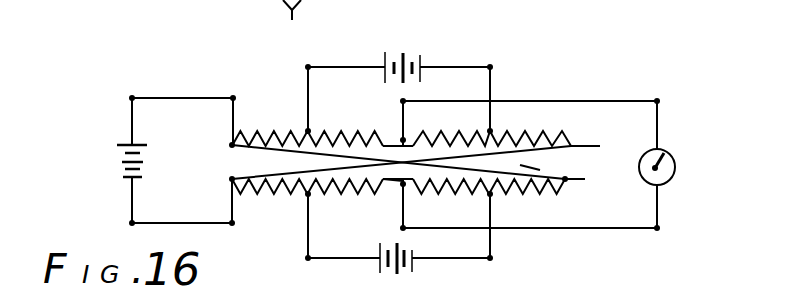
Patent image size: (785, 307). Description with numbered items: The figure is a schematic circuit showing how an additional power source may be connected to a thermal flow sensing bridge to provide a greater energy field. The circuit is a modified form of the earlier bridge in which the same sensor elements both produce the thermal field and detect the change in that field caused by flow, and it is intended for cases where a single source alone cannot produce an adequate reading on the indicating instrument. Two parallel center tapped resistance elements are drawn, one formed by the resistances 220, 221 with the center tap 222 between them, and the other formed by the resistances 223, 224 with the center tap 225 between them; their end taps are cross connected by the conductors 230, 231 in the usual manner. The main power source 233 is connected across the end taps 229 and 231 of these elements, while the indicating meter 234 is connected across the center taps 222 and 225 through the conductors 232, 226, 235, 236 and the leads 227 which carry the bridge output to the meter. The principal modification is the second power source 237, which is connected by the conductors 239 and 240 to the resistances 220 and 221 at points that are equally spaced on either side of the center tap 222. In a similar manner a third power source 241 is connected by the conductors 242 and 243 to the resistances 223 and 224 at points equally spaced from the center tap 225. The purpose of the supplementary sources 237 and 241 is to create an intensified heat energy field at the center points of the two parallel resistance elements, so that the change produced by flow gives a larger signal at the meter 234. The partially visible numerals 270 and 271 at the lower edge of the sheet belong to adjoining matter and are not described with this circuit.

The resistance 220 is at (279, 131).
The resistance 221 is at (516, 115).
The center tap 222 is at (418, 110).
The resistance 223 is at (253, 182).
The resistance 224 is at (494, 197).
The center tap 225 is at (397, 197).
The cross conductor 226 is at (535, 173).
The conductor 227 is at (566, 180).
The end tap 229 is at (230, 142).
The cross conductor 230 is at (278, 175).
The end tap 231 is at (230, 181).
The conductor 232 is at (573, 143).
The power source 233 is at (118, 156).
The indicating meter 234 is at (675, 167).
The conductor 235 is at (594, 100).
The conductor 236 is at (620, 230).
The second power source 237 is at (413, 56).
The conductor 239 is at (310, 88).
The conductor 240 is at (492, 78).
The third power source 241 is at (412, 262).
The conductor 242 is at (348, 260).
The conductor 243 is at (492, 246).
The element 270 is at (523, 304).
The element 271 is at (712, 305).